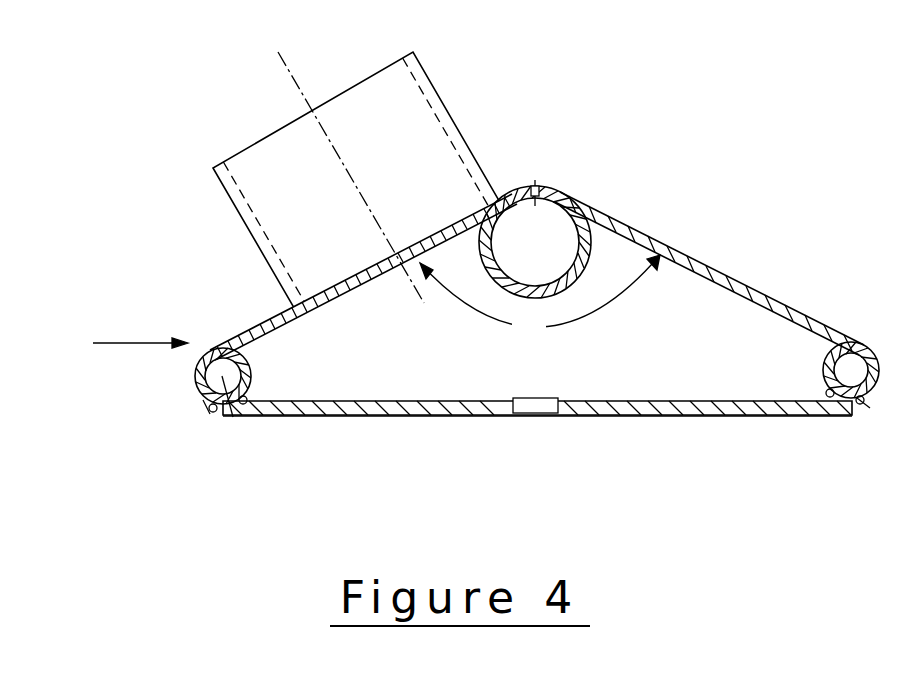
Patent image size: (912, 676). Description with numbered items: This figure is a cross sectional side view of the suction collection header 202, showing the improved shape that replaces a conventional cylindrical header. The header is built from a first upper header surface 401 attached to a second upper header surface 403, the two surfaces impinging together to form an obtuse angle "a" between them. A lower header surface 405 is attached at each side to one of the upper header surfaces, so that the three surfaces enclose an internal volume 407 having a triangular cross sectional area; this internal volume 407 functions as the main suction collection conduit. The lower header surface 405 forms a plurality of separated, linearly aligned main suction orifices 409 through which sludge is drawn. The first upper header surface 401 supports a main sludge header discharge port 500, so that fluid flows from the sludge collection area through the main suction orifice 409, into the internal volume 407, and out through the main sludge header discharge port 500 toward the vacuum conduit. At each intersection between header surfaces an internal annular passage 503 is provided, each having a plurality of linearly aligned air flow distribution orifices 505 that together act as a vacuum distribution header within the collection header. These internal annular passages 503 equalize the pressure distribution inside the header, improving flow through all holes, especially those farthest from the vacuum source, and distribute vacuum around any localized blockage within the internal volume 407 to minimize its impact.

The suction collection header 202 is at (682, 165).
The first upper header surface 401 is at (445, 225).
The second upper header surface 403 is at (698, 257).
The lower header surface 405 is at (358, 417).
The internal volume 407 is at (738, 353).
The main suction orifice 409 is at (540, 407).
The main sludge header discharge port 500 is at (368, 76).
The internal annular passage 503 is at (229, 420).
The air flow distribution orifice 505 is at (252, 375).